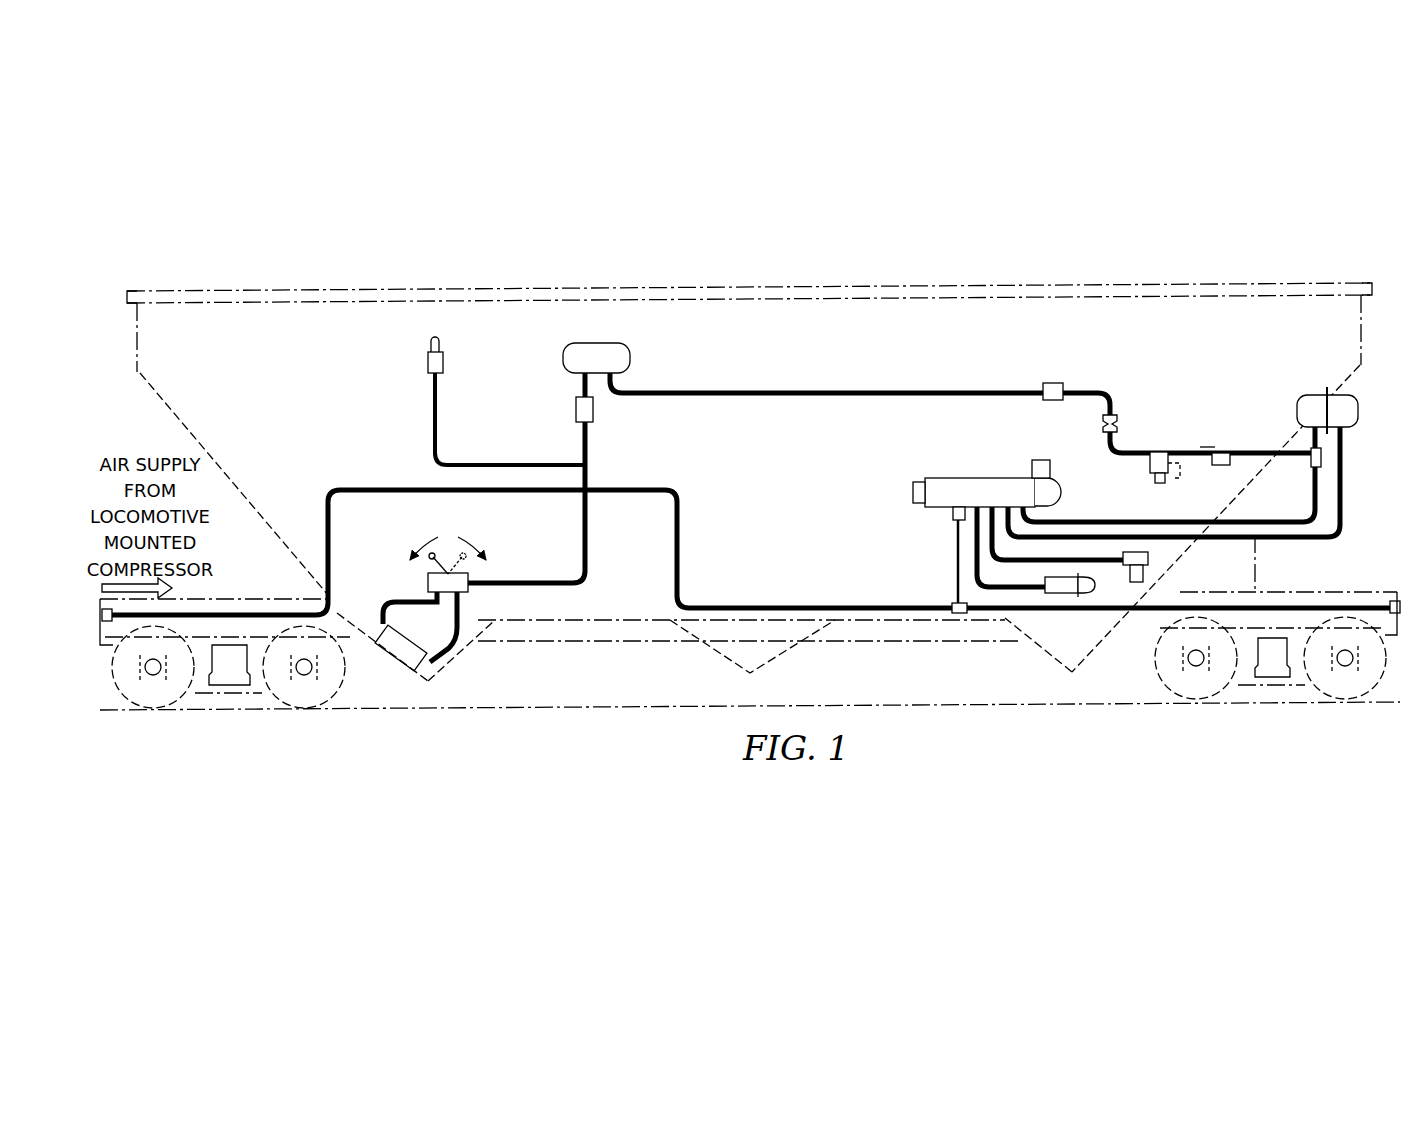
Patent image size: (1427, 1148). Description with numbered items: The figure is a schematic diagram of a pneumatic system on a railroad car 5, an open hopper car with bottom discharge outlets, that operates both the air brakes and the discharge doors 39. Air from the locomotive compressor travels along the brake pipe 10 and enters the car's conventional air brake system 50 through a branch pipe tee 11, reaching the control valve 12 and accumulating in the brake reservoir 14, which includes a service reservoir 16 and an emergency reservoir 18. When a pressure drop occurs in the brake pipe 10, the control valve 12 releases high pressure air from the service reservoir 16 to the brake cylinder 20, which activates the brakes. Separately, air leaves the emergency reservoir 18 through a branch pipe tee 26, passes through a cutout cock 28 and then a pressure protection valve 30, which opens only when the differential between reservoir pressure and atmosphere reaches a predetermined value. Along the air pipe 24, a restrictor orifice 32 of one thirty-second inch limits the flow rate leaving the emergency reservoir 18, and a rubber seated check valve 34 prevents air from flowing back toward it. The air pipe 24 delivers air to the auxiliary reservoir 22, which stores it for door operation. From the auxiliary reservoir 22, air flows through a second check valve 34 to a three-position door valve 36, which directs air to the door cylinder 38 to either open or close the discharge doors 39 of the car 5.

The railroad car 5 is at (400, 286).
The brake pipe 10 is at (1090, 612).
The branch pipe tee 11 is at (958, 614).
The control valve 12 is at (1032, 470).
The brake reservoir 14 is at (1346, 396).
The service reservoir 16 is at (1352, 416).
The emergency reservoir 18 is at (1312, 398).
The brake cylinder 20 is at (1062, 597).
The auxiliary air reservoir 22 is at (556, 357).
The air pipe 24 is at (835, 392).
The branch pipe tee 26 is at (1310, 470).
The cutout cock 28 is at (1222, 453).
The pressure protection valve 30 is at (1160, 452).
The restrictor orifice 32 is at (1122, 415).
The check valve 34 is at (576, 408).
The door valve 36 is at (428, 582).
The door cylinder 38 is at (398, 662).
The discharge doors 39 is at (458, 655).
The air brake system 50 is at (891, 446).